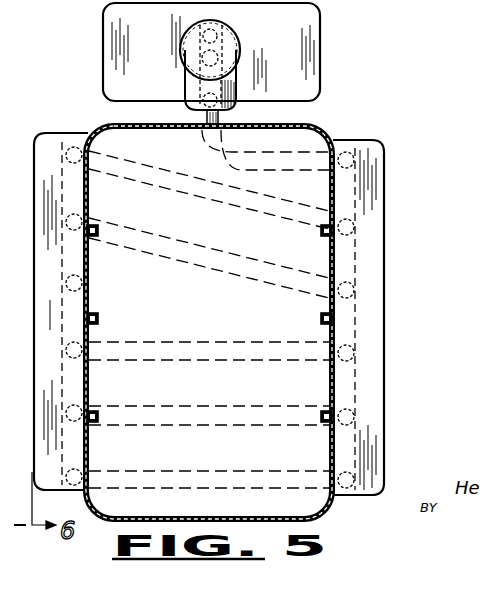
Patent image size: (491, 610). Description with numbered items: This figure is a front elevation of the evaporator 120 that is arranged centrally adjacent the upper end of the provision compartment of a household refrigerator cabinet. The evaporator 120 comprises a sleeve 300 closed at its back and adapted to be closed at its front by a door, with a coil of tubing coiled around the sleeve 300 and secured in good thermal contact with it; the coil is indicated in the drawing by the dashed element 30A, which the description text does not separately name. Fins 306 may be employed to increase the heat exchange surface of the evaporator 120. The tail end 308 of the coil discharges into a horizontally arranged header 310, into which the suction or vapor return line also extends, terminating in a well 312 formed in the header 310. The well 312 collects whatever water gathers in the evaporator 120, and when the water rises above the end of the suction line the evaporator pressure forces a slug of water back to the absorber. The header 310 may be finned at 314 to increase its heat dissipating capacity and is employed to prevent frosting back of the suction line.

The sleeve 300 is at (318, 128).
The fins 306 is at (372, 193).
The tail end 308 is at (222, 123).
The header 310 is at (234, 49).
The well 312 is at (186, 86).
The fins of header 314 is at (318, 52).
The evaporator 120 is at (340, 270).
The strap 30A is at (258, 345).